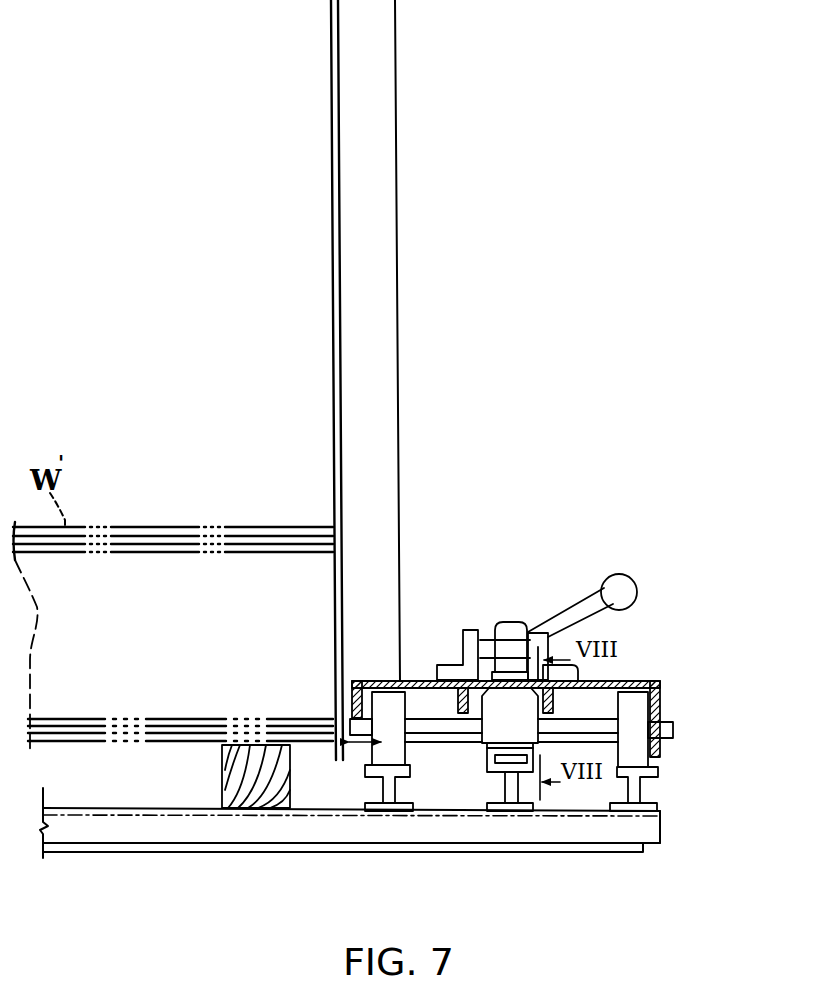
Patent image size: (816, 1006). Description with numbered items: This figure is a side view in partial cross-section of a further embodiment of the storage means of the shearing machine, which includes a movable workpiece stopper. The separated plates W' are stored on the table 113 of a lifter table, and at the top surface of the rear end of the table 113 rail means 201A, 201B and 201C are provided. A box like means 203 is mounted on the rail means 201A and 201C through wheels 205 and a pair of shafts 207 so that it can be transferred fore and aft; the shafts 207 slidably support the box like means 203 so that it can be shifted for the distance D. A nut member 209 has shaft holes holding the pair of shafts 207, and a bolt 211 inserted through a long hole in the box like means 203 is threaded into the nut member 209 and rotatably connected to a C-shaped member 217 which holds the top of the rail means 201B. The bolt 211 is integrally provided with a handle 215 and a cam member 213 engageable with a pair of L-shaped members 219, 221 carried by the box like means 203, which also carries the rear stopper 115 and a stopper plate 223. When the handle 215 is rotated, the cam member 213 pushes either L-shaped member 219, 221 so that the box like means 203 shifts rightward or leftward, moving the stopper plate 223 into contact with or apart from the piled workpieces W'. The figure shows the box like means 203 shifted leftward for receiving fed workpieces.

The table 113 is at (246, 838).
The rear stopper 115 is at (387, 63).
The rail means 201A is at (375, 813).
The rail means 201B is at (527, 813).
The rail means 201C is at (636, 803).
The box like means 203 is at (661, 702).
The wheels 205 is at (367, 758).
The shafts 207 is at (674, 738).
The nut member 209 is at (530, 730).
The bolt 211 is at (511, 624).
The cam member 213 is at (550, 638).
The handle 215 is at (592, 590).
The C-shaped member 217 is at (487, 750).
The L-shaped member 219 is at (460, 672).
The L-shaped member 221 is at (580, 677).
The stopper plate 223 is at (329, 192).